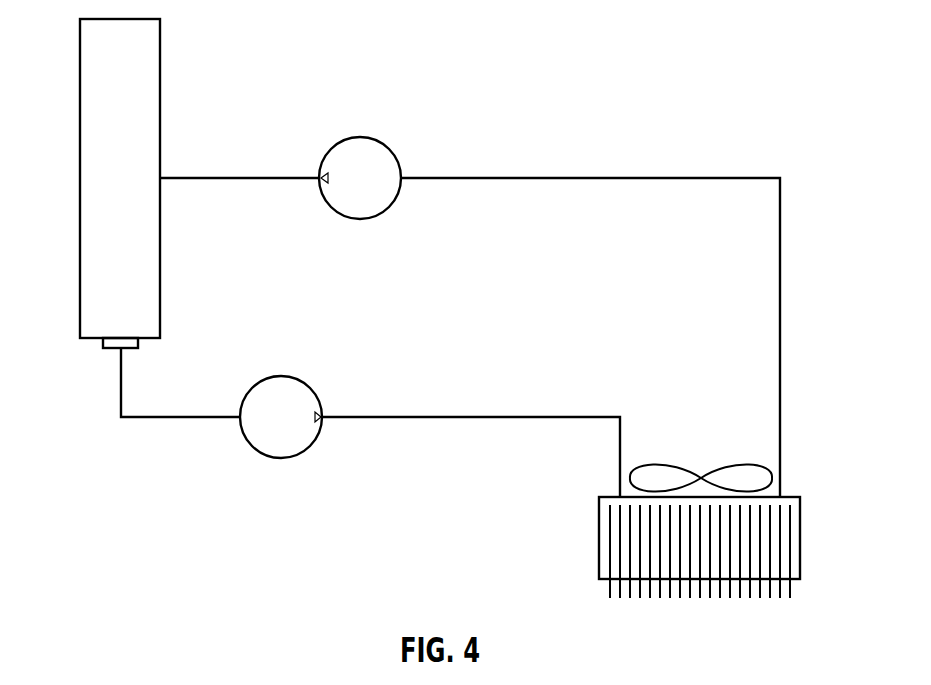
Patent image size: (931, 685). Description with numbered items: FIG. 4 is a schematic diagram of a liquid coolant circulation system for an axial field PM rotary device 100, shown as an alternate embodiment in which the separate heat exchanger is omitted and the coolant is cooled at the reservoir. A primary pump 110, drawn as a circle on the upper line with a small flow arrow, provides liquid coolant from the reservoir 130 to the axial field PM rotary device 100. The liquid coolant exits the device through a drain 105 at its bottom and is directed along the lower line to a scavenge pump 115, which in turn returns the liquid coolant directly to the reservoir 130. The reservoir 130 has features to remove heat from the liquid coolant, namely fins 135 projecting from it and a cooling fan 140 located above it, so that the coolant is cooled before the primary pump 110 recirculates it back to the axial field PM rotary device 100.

The axial field PM rotary device 100 is at (78, 82).
The drain 105 is at (112, 350).
The primary pump 110 is at (384, 146).
The scavenge pump 115 is at (281, 458).
The reservoir 130 is at (800, 538).
The fins 135 is at (790, 590).
The cooling fan 140 is at (727, 468).